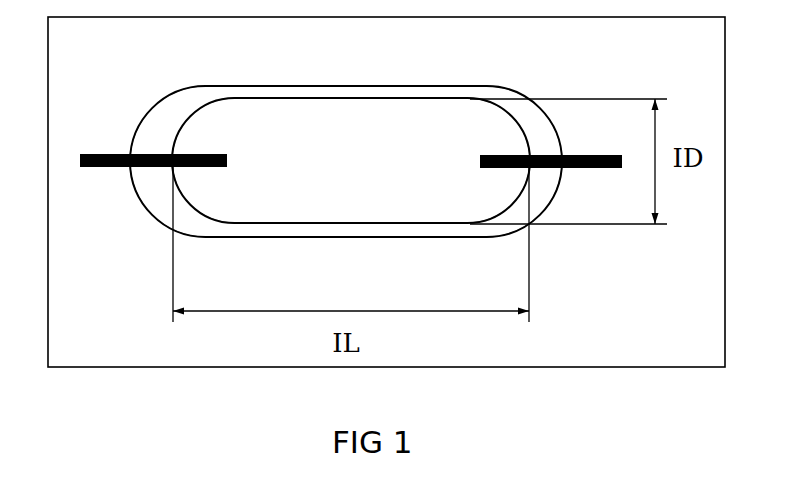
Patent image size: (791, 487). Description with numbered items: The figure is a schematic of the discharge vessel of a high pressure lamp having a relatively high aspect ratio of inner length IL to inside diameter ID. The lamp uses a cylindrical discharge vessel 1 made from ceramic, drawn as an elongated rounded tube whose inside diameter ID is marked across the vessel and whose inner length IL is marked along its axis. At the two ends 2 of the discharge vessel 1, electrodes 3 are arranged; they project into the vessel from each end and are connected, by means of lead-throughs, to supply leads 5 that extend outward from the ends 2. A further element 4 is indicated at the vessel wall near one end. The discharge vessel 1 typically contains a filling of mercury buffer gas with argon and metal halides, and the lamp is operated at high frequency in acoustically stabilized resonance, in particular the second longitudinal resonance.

The discharge vessel 1 is at (358, 85).
The ends 2 is at (147, 105).
The electrodes 3 is at (218, 168).
The outer wall surface 4 is at (155, 167).
The supply leads 5 is at (83, 153).